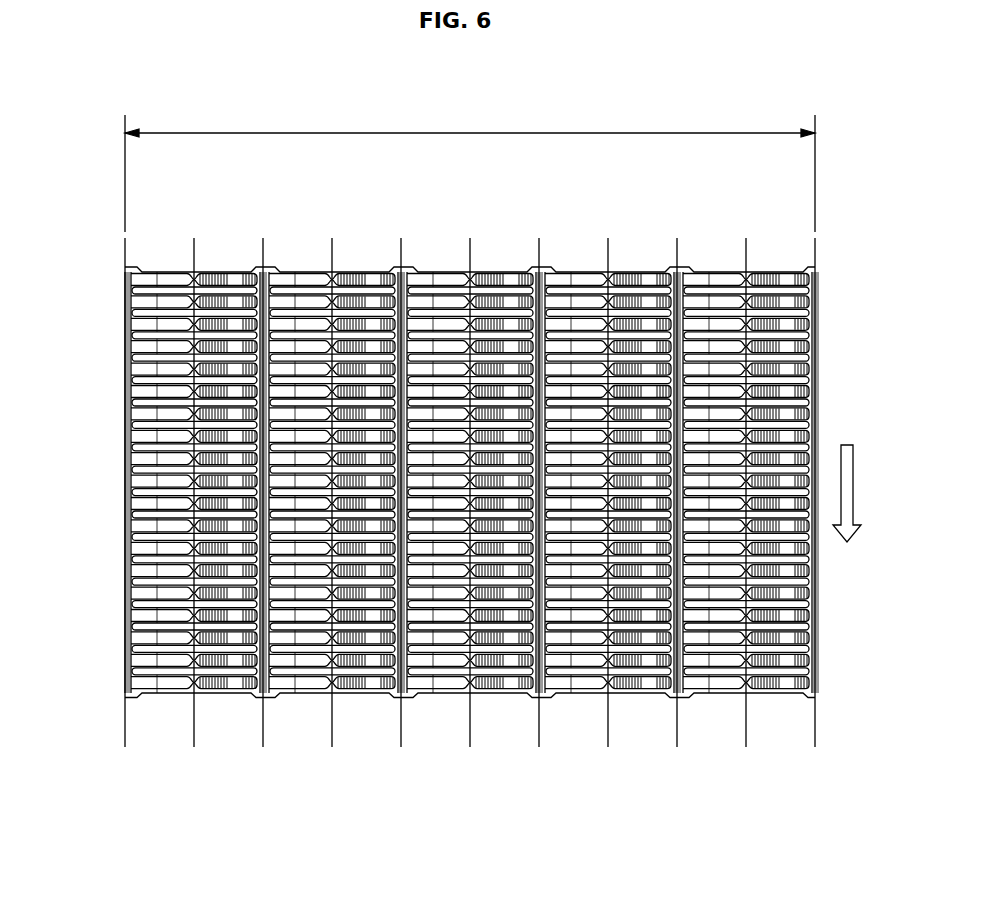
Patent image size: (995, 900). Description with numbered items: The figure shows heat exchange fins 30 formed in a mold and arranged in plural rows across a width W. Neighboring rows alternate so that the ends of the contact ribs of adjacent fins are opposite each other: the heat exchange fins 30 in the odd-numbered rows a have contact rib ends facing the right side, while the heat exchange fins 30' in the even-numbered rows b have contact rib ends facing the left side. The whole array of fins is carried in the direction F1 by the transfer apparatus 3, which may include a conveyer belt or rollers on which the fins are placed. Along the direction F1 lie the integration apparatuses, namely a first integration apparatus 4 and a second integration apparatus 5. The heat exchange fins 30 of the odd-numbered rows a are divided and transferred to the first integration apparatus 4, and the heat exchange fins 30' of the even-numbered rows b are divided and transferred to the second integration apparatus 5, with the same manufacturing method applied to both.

The transfer apparatus 3 is at (108, 724).
The first integration apparatus 4 is at (435, 775).
The second integration apparatus 5 is at (504, 775).
The heat exchange fins 30 is at (165, 216).
The heat exchange fins in even-numbered rows 30' is at (242, 216).
The width W is at (470, 171).
The transfer direction F1 is at (859, 493).